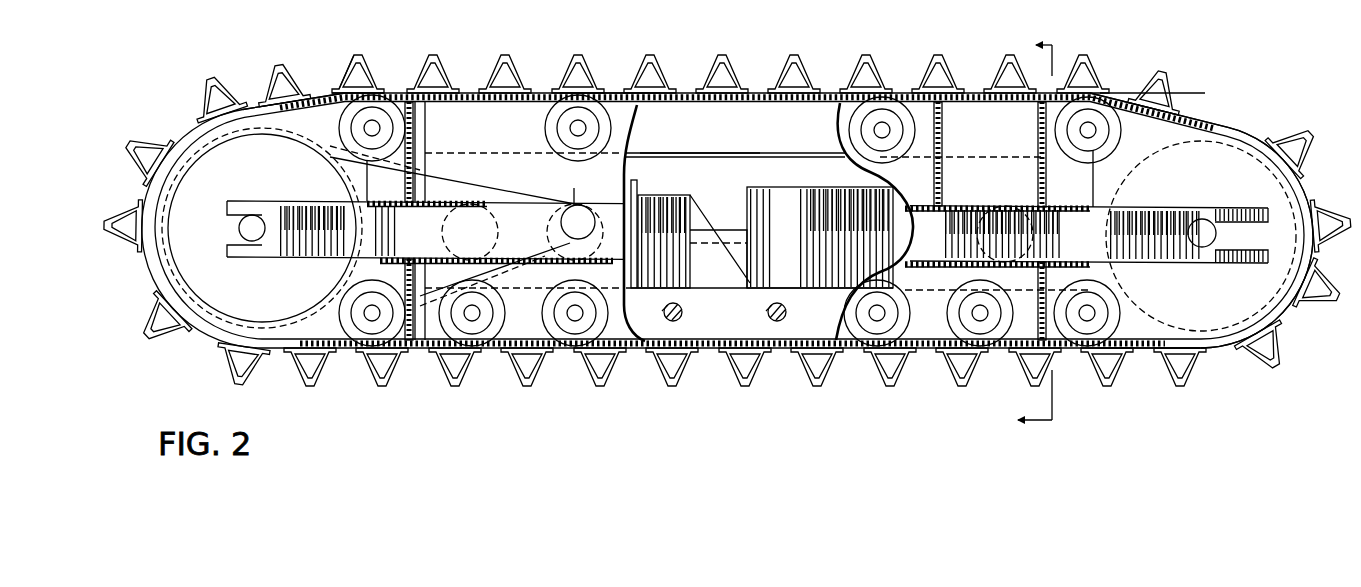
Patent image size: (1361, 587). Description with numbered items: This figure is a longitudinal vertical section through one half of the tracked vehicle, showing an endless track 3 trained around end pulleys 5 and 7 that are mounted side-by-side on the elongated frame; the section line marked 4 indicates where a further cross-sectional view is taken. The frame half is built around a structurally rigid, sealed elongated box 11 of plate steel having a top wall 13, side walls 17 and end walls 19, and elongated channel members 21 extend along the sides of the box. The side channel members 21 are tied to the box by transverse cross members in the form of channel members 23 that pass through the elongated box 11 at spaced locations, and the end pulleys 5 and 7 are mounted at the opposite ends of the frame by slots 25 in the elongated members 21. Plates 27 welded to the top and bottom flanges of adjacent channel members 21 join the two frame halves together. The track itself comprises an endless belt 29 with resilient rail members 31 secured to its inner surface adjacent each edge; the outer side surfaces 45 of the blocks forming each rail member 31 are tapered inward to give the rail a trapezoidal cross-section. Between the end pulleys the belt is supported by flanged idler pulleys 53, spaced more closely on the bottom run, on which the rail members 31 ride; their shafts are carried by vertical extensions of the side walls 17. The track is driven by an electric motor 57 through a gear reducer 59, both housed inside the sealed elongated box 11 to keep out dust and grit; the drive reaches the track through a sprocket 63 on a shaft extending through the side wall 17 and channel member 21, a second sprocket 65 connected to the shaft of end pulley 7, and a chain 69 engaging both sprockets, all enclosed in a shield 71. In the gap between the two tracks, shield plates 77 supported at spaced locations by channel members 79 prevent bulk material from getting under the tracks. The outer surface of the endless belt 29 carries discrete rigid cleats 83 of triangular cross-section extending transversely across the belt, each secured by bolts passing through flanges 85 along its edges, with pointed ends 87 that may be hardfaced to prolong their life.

The endless track 3 is at (970, 91).
The section line 4- 4 is at (1022, 233).
The end pulley 5 is at (1298, 176).
The end pulley 7 is at (190, 150).
The elongated box 11 is at (690, 152).
The top wall 13 is at (748, 154).
The side wall 17 is at (628, 193).
The end wall 19 is at (362, 183).
The channel member 21 is at (272, 201).
The channel member 23 is at (410, 236).
The slot 25 is at (230, 215).
The plate 27 is at (440, 195).
The endless belt 29 is at (612, 92).
The resilient rail member 31 is at (322, 95).
The side surface 45 is at (705, 288).
The flanged idler pulley 53 is at (340, 130).
The electric motor 57 is at (785, 190).
The gear reducer 59 is at (668, 195).
The sprocket 63 is at (573, 200).
The second sprocket 65 is at (152, 200).
The chain 69 is at (470, 190).
The shield 71 is at (525, 196).
The shield plate 77 is at (943, 142).
The channel member 79 is at (1120, 105).
The cleat 83 is at (368, 60).
The flange 85 is at (384, 94).
The pointed end 87 is at (348, 60).